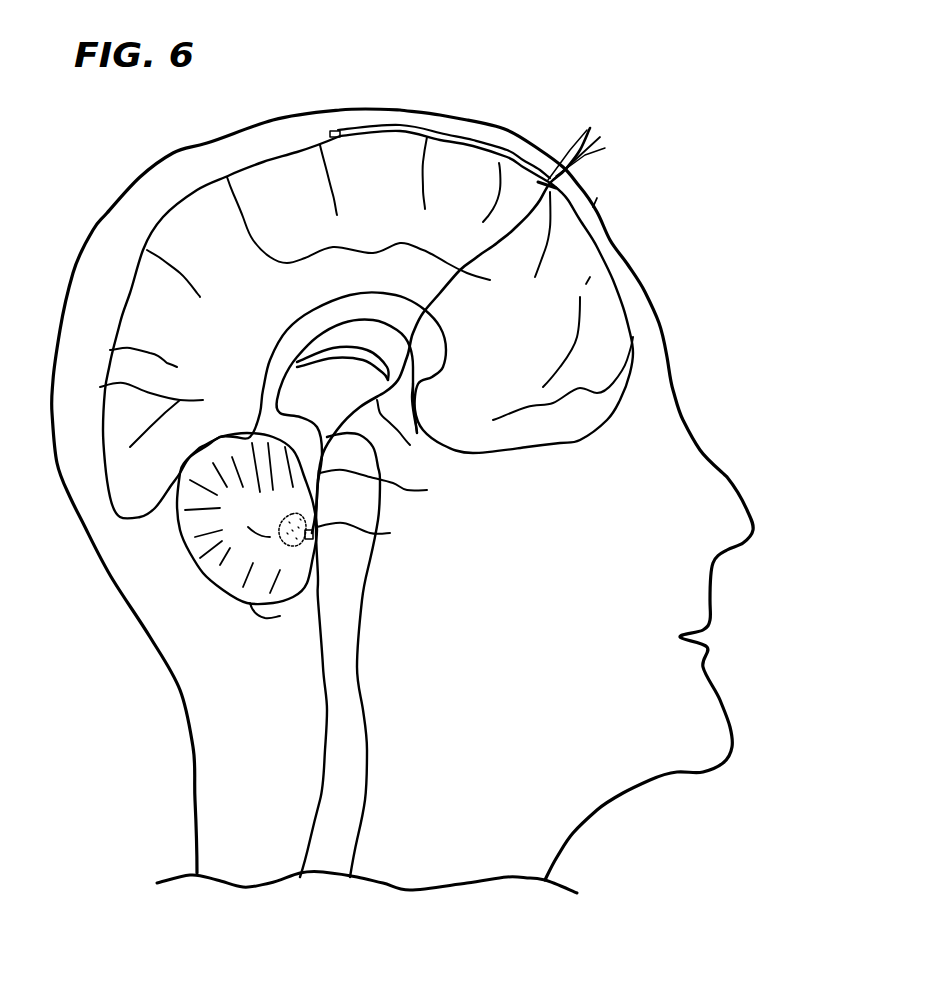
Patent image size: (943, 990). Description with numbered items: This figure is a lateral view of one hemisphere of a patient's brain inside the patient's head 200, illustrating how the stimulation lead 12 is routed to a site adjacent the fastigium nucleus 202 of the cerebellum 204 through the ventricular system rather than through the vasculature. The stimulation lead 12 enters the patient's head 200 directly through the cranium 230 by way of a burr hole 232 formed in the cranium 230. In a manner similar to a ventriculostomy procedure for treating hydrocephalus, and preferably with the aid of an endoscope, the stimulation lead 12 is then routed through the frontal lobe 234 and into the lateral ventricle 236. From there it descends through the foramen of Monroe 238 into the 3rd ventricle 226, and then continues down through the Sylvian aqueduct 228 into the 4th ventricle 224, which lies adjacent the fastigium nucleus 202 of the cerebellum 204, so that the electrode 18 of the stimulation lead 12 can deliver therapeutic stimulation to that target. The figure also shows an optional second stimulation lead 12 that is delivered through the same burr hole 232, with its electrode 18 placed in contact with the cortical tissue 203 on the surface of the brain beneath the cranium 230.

The patient's head 200 is at (500, 123).
The cortical tissue 203 is at (282, 170).
The stimulation lead 12 is at (430, 125).
The electrode 18 is at (333, 133).
The burr hole 232 is at (567, 143).
The cranium 230 is at (597, 198).
The frontal lobe 234 is at (590, 277).
The lateral ventricle 236 is at (350, 337).
The foramen of Monroe 238 is at (400, 387).
The 3rd ventricle 226 is at (406, 439).
The Sylvian aqueduct 228 is at (393, 655).
The 4th ventricle 224 is at (380, 537).
The fastigium nucleus 202 is at (315, 490).
The cerebellum 204 is at (255, 603).